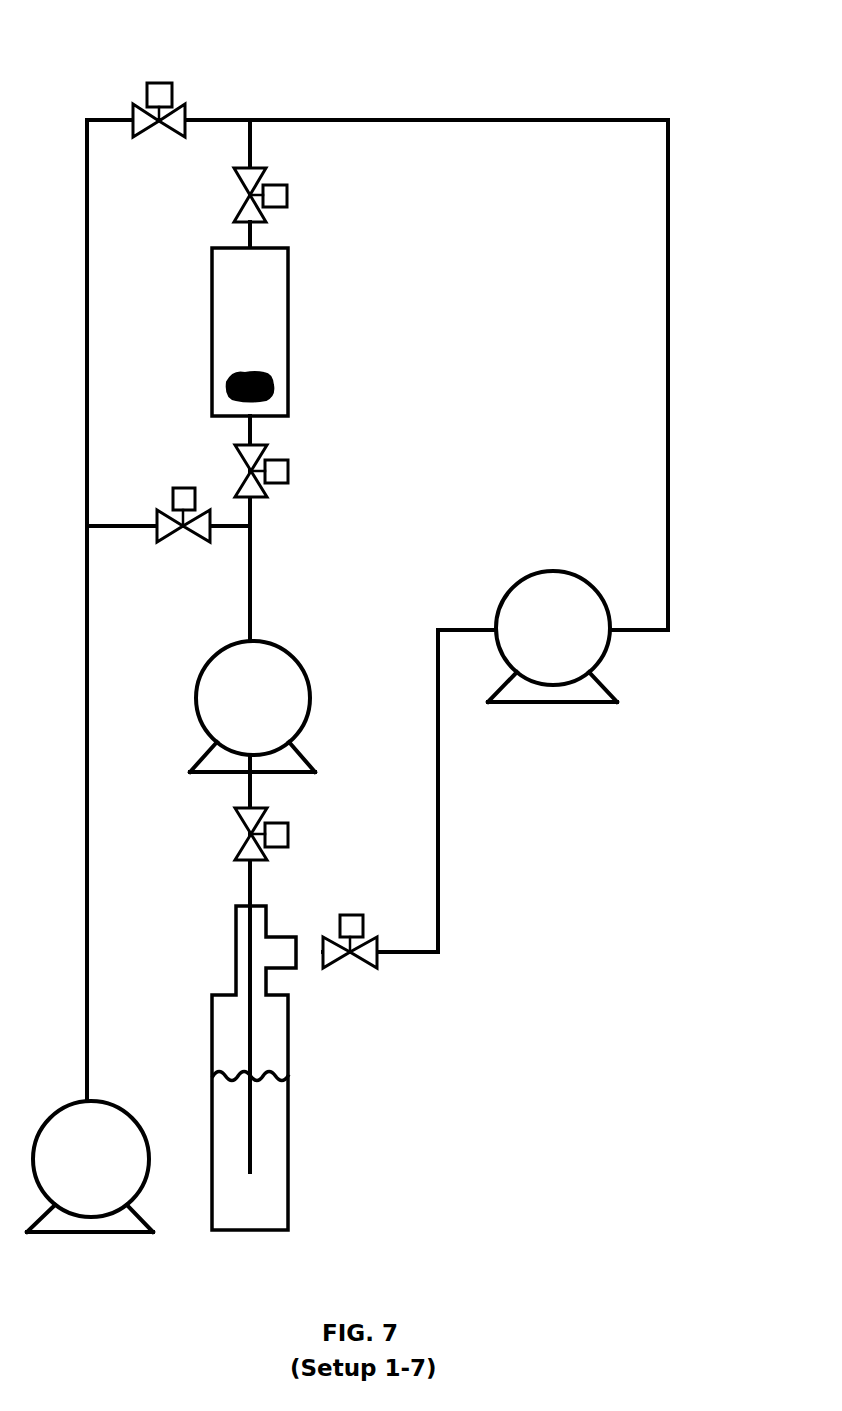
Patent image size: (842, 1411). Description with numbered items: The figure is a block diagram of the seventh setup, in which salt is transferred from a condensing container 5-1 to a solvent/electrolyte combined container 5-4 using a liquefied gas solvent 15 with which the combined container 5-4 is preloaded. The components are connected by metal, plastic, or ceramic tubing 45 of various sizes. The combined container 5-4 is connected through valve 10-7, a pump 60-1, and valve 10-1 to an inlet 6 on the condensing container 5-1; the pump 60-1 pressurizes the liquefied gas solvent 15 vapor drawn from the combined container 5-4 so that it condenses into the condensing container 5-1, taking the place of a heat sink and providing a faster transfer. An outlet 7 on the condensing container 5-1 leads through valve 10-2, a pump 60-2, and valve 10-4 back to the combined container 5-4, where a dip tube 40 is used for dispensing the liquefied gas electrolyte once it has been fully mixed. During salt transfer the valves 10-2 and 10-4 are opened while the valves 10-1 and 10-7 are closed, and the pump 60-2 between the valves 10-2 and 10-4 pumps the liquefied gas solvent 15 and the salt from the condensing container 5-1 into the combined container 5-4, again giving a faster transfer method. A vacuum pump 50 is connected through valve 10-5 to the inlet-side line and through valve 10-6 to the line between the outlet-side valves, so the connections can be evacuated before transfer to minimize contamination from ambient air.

The valve 10-5 is at (147, 83).
The valve 10-1 is at (285, 192).
The inlet 6 is at (248, 246).
The condensing container 5-1 is at (288, 250).
The outlet 7 is at (245, 418).
The valve 10-2 is at (288, 472).
The valve 10-6 is at (190, 533).
The pump 60-1 is at (515, 582).
The pump 60-2 is at (200, 710).
The valve 10-4 is at (288, 828).
The tubing 45 is at (443, 893).
The valve 10-7 is at (355, 950).
The dip tube 40 is at (250, 990).
The solvent/electrolyte combined container 5-4 is at (288, 1052).
The liquefied gas solvent 15 is at (263, 1158).
The vacuum pump 50 is at (110, 1102).